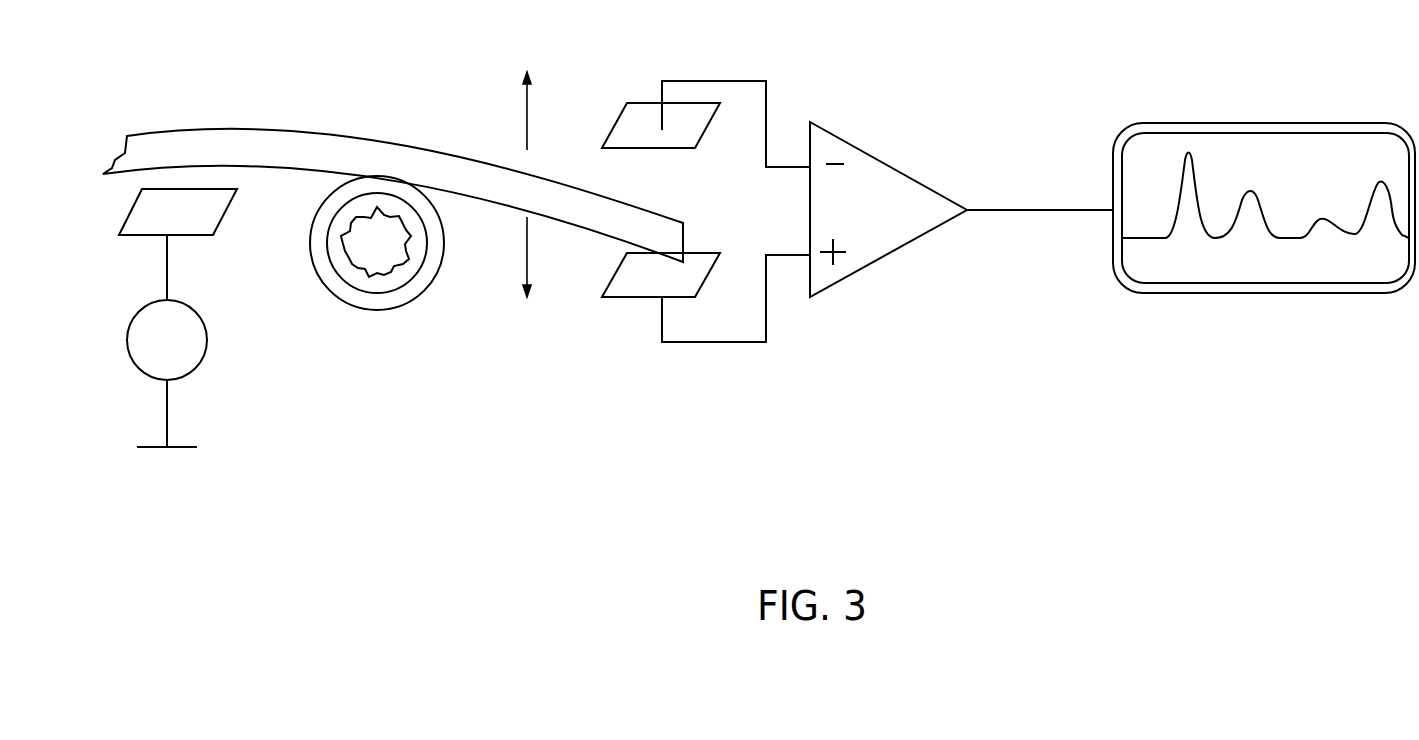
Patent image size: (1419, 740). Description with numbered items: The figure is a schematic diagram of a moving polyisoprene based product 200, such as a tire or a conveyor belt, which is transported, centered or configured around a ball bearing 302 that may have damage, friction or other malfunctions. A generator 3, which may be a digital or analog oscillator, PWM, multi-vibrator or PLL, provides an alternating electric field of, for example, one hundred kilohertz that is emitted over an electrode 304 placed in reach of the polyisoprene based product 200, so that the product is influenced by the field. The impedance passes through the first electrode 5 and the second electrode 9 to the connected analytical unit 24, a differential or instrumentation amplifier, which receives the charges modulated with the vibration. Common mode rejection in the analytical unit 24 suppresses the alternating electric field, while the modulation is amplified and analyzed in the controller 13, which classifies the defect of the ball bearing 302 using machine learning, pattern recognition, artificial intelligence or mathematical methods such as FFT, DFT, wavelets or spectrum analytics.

The polyisoprene based product 200 is at (395, 155).
The electrode 304 is at (143, 216).
The generator 3 is at (187, 352).
The ball bearing 302 is at (375, 265).
The second electrode 9 is at (622, 128).
The first electrode 5 is at (627, 287).
The analytical unit 24 is at (872, 233).
The controller 13 is at (1288, 152).